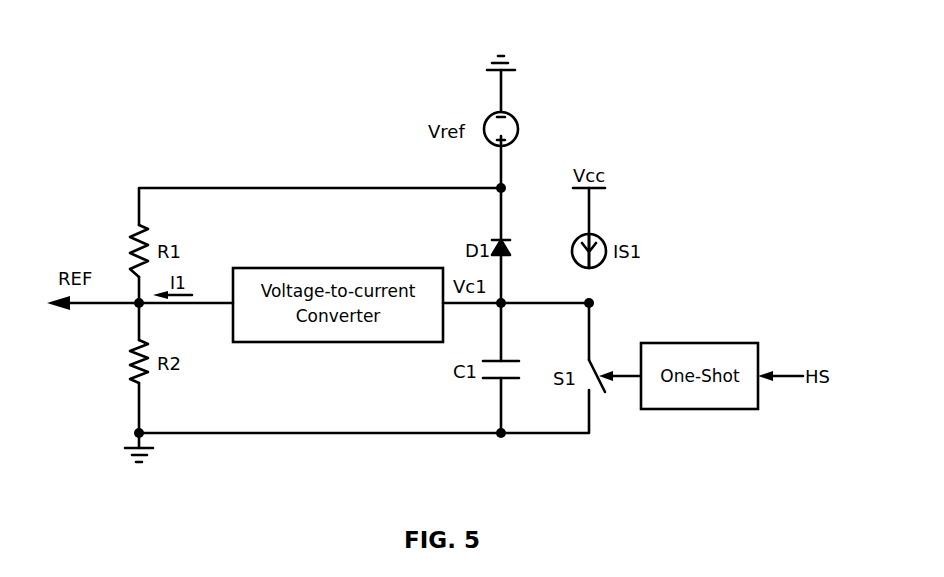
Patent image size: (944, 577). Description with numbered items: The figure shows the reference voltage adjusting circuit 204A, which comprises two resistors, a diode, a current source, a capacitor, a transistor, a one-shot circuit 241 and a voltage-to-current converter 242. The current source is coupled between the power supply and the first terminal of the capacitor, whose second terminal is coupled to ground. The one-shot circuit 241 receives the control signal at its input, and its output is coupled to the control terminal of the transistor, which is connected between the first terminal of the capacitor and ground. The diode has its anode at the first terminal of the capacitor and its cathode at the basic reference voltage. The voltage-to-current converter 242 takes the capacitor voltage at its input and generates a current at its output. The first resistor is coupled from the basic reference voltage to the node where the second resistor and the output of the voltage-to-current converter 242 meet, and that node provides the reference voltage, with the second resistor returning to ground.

The reference voltage adjusting circuit 204A is at (767, 80).
The voltage-to-current converter 242 is at (325, 342).
The one-shot circuit 241 is at (670, 409).